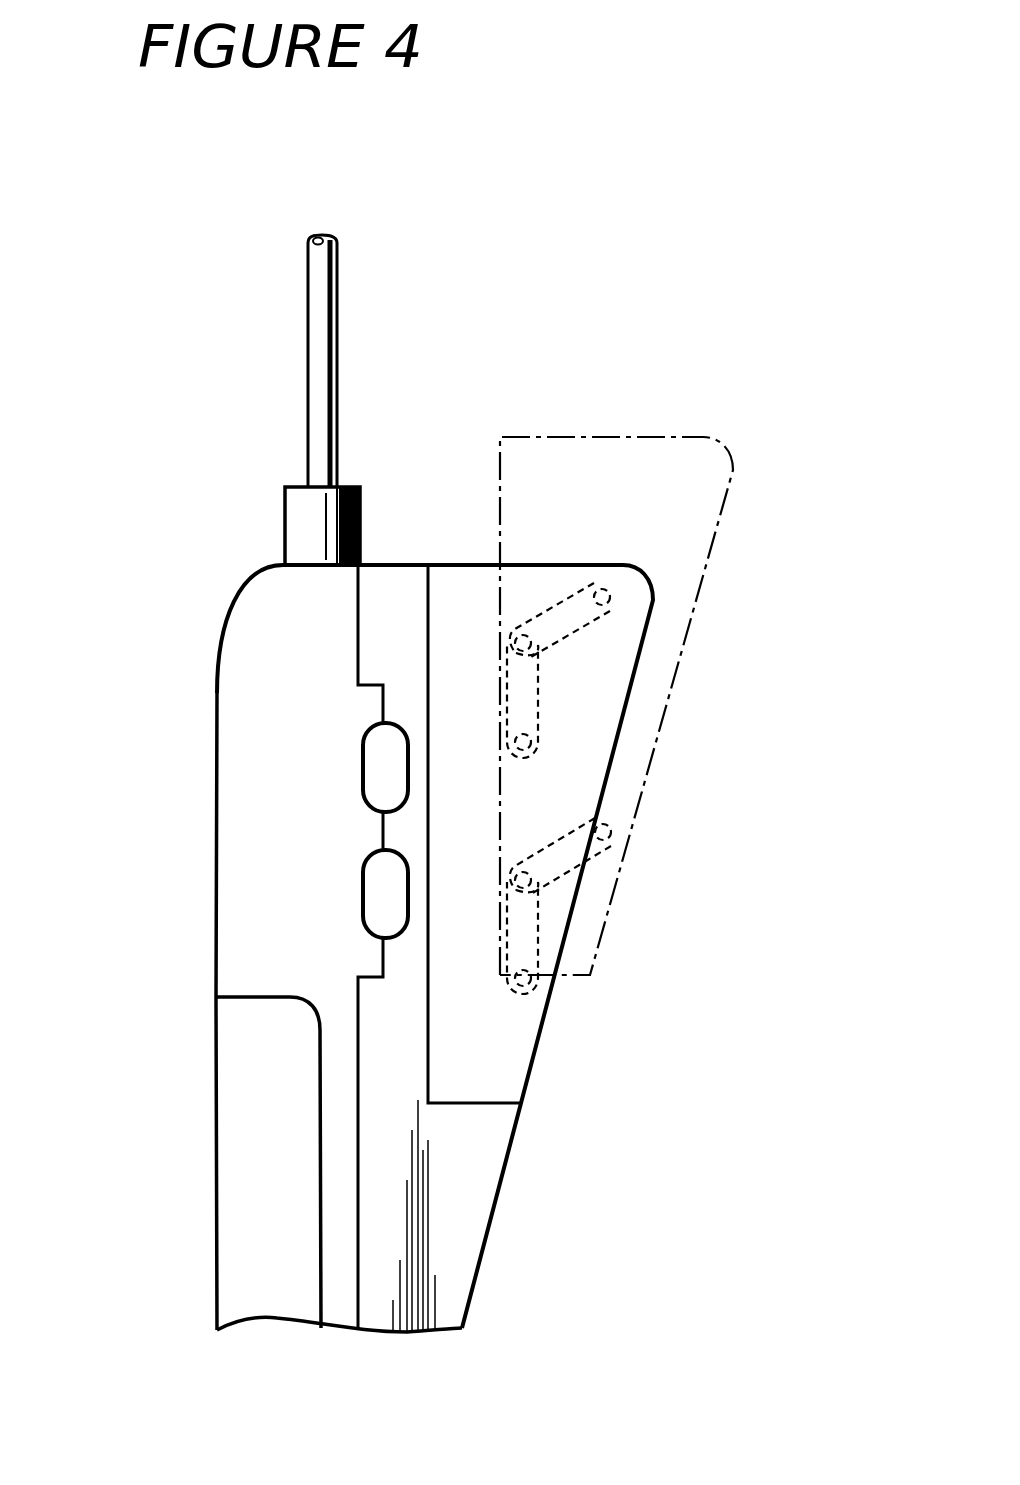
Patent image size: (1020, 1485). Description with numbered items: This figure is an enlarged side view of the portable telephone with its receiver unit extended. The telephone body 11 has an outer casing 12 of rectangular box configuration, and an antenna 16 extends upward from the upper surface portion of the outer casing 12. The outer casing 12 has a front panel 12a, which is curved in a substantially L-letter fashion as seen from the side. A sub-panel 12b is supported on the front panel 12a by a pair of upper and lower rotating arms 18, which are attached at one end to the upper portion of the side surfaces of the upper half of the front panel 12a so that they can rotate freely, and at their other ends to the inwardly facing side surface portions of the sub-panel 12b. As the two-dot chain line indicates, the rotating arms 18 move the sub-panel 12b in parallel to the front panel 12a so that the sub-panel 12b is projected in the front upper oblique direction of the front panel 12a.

The telephone body 11 is at (212, 683).
The outer casing 12 is at (242, 888).
The front panel 12a is at (463, 1205).
The sub-panel 12b is at (713, 557).
The antenna 16 is at (338, 320).
The rotating arms 18 is at (538, 695).